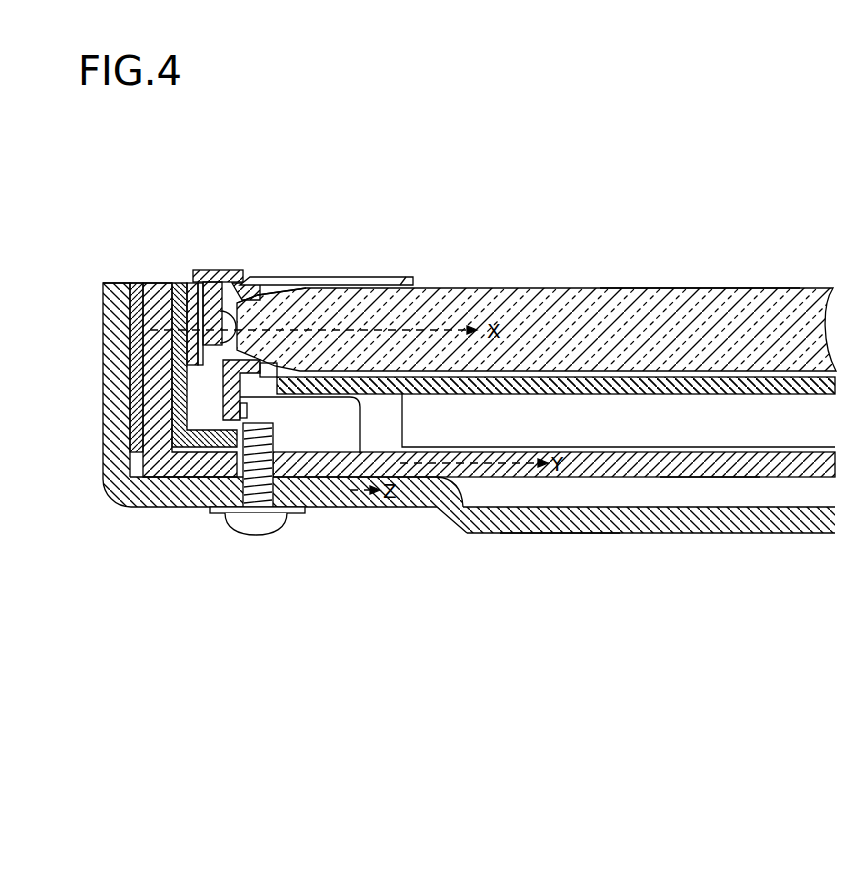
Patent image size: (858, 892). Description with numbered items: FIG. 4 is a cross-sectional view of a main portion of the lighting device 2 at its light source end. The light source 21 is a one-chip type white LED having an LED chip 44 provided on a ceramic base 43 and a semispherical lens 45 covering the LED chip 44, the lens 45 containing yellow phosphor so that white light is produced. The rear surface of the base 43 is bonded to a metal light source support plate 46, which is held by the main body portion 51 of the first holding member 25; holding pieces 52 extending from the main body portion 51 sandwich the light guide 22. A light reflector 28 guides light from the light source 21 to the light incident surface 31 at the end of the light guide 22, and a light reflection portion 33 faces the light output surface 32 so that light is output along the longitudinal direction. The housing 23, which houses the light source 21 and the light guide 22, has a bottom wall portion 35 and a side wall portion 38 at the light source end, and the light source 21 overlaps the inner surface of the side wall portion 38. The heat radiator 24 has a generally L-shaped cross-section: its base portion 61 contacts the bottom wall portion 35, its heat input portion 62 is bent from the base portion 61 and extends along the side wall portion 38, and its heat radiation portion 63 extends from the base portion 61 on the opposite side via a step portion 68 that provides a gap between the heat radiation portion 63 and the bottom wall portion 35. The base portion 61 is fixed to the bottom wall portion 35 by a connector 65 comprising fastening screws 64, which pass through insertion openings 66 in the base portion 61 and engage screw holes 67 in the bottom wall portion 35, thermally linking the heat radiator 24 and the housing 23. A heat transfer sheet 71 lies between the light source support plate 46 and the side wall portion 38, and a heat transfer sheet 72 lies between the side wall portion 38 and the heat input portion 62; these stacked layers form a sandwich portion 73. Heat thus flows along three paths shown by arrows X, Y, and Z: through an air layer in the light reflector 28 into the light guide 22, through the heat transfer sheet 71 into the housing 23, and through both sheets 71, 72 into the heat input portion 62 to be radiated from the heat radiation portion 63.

The lighting device 2 is at (630, 258).
The light source 21 is at (214, 257).
The light guide 22 is at (515, 286).
The housing 23 is at (610, 480).
The heat radiator 24 is at (480, 535).
The first holding member 25 is at (331, 282).
The light reflector 28 is at (236, 398).
The light incident surface 31 is at (280, 402).
The light output surface 32 is at (716, 288).
The light reflection portion 33 is at (716, 376).
The bottom wall portion 35 is at (708, 480).
The side wall portion 38 is at (143, 393).
The ceramic base 43 is at (205, 288).
The LED chip 44 is at (214, 300).
The semispherical lens 45 is at (251, 257).
The light source support plate 46 is at (170, 283).
The main body portion 51 is at (258, 292).
The holding pieces 52 is at (368, 280).
The base portion 61 is at (340, 507).
The heat input portion 62 is at (103, 355).
The heat radiation portion 63 is at (547, 535).
The fastening screws 64 is at (256, 537).
The connector 65 is at (248, 511).
The insertion openings 66 is at (272, 508).
The screw holes 67 is at (263, 453).
The step portion 68 is at (433, 515).
The heat transfer sheet 71 is at (178, 440).
The heat transfer sheet 72 is at (143, 445).
The sandwich portion 73 is at (140, 281).